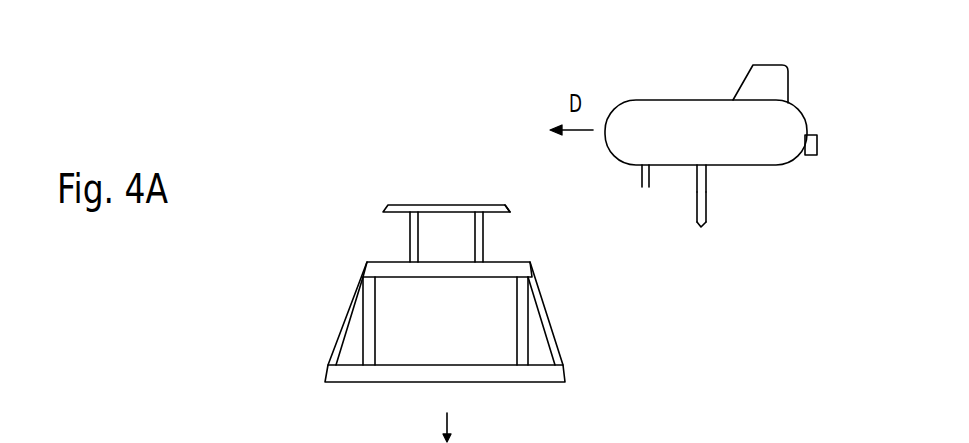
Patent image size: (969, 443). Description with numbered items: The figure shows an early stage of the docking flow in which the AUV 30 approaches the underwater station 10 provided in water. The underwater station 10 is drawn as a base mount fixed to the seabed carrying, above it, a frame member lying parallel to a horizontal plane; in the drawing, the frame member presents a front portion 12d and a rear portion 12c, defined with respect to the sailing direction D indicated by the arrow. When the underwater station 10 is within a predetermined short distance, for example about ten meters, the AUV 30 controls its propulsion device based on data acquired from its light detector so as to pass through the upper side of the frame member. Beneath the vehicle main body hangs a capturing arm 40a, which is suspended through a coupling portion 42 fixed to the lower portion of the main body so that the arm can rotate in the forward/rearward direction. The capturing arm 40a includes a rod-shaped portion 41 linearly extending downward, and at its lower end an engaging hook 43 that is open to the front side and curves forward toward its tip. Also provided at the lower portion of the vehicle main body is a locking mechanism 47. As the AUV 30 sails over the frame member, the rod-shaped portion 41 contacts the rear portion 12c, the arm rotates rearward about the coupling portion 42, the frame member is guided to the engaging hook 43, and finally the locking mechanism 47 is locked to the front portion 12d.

The underwater station 10 is at (342, 305).
The rear portion of the frame member 12c is at (507, 211).
The front portion of the frame member 12d is at (387, 205).
The AUV 30 is at (801, 106).
The capturing arm 40a is at (708, 210).
The rod-shaped portion 41 is at (708, 192).
The coupling portion 42 is at (713, 170).
The engaging hook 43 is at (699, 240).
The locking mechanism 47 is at (641, 182).